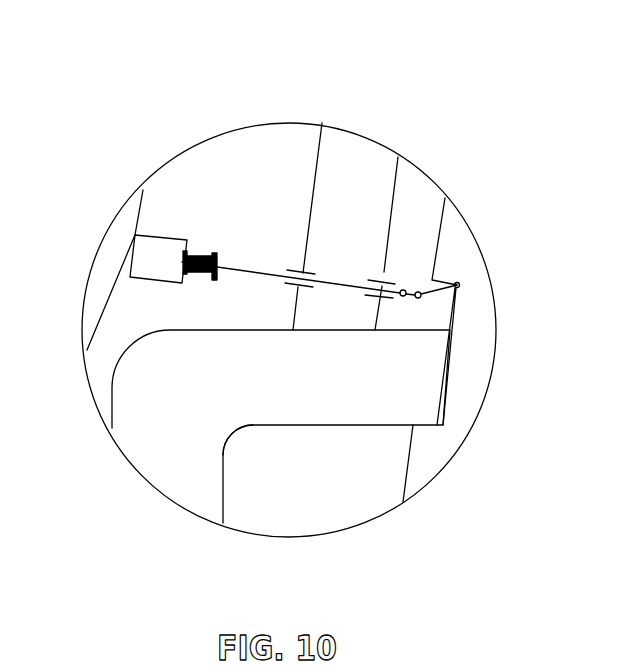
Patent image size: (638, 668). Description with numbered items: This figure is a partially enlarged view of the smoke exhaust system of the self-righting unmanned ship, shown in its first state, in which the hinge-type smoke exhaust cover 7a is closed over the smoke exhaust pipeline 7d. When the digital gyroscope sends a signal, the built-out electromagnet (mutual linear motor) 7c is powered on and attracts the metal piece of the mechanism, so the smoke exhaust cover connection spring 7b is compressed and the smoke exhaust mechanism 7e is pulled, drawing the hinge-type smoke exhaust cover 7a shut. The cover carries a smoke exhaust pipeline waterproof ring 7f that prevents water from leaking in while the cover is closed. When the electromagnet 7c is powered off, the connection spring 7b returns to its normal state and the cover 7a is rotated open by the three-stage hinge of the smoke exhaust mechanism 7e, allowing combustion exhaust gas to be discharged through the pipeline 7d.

The hinge-type smoke exhaust cover 7a is at (448, 393).
The smoke exhaust cover connection spring 7b is at (188, 242).
The built-out electromagnet (mutual linear motor) 7c is at (135, 235).
The smoke exhaust pipeline 7d is at (235, 435).
The smoke exhaust mechanism 7e is at (261, 274).
The smoke exhaust pipeline waterproof ring 7f is at (446, 423).